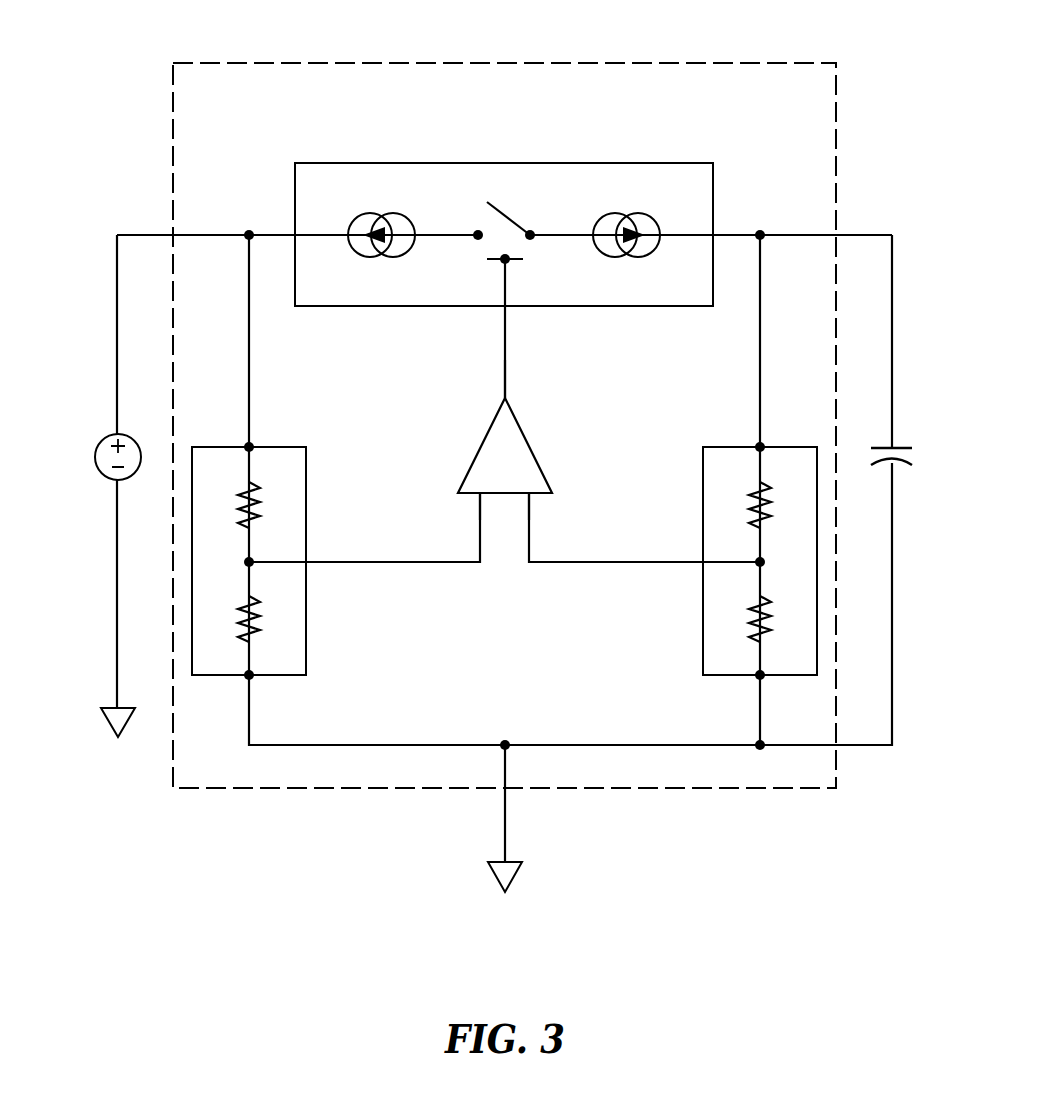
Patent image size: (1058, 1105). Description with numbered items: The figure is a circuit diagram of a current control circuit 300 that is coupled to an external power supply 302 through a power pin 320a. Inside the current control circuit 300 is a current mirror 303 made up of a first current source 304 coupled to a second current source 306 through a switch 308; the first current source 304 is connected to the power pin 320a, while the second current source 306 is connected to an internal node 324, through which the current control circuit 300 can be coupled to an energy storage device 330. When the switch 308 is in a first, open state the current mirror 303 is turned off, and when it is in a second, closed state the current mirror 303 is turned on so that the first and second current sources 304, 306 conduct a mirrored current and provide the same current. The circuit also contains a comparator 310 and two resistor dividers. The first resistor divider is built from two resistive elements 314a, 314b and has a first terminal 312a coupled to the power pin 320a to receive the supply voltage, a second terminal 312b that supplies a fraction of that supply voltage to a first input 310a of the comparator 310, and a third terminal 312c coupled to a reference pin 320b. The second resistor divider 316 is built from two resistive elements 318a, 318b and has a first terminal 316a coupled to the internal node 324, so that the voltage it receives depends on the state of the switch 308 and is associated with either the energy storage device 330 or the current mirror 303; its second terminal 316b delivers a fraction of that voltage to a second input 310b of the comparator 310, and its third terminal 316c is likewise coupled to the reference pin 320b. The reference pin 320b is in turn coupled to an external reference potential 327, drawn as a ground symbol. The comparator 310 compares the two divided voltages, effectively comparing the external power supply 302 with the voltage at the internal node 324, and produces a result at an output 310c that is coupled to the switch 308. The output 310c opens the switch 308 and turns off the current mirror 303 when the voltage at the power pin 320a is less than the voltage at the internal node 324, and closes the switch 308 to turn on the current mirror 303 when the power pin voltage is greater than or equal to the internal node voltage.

The current control circuit 300 is at (750, 63).
The external power supply 302 is at (101, 446).
The current mirror 303 is at (680, 163).
The first current source 304 is at (352, 250).
The second current source 306 is at (657, 250).
The switch 308 is at (511, 263).
The comparator 310 is at (528, 442).
The first input of comparator 310a is at (478, 495).
The second input of comparator 310b is at (530, 495).
The output of comparator 310c is at (507, 395).
The first terminal of first resistor divider 312a is at (253, 443).
The second terminal of first resistor divider 312b is at (253, 565).
The third terminal of first resistor divider 312c is at (253, 678).
The resistive element 314a is at (257, 495).
The resistive element 314b is at (260, 620).
The second resistor divider 316 is at (797, 447).
The first terminal of second resistor divider 316a is at (757, 443).
The second terminal of second resistor divider 316b is at (757, 565).
The third terminal of second resistor divider 316c is at (757, 678).
The resistive element 318a is at (748, 503).
The resistive element 318b is at (748, 628).
The power pin 320a is at (249, 235).
The reference pin 320b is at (505, 743).
The internal node 324 is at (760, 235).
The ground 327 is at (513, 877).
The energy storage device 330 is at (912, 457).